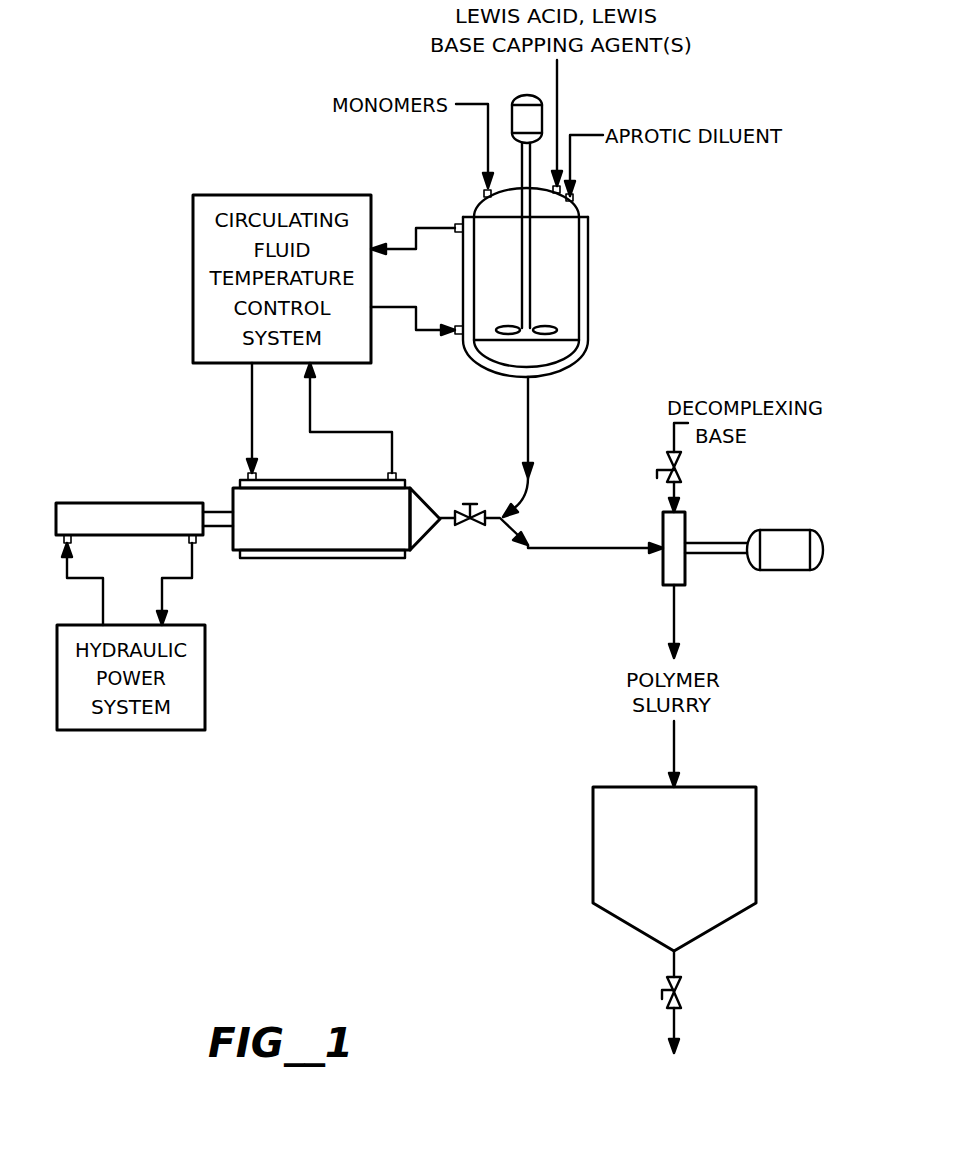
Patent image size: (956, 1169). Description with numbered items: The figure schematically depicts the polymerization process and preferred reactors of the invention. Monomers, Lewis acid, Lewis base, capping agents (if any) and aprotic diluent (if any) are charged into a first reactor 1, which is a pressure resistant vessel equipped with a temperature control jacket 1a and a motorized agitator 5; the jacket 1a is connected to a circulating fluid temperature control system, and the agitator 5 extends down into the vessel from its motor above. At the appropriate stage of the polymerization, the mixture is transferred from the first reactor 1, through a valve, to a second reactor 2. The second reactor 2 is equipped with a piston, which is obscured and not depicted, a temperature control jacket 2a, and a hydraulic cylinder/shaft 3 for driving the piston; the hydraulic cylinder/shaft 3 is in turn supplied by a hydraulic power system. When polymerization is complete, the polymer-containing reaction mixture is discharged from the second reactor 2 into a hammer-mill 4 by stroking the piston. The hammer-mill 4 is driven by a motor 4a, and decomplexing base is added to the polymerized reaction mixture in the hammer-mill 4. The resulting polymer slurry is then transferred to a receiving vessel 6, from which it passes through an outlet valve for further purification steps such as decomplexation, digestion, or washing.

The first reactor 1 is at (600, 280).
The temperature control jacket 1a is at (500, 378).
The second reactor 2 is at (418, 565).
The temperature control jacket 2a is at (316, 558).
The hydraulic cylinder/shaft 3 is at (157, 503).
The hammer-mill 4 is at (662, 570).
The motor 4a is at (770, 572).
The motorized agitator 5 is at (512, 123).
The receiving vessel 6 is at (593, 843).